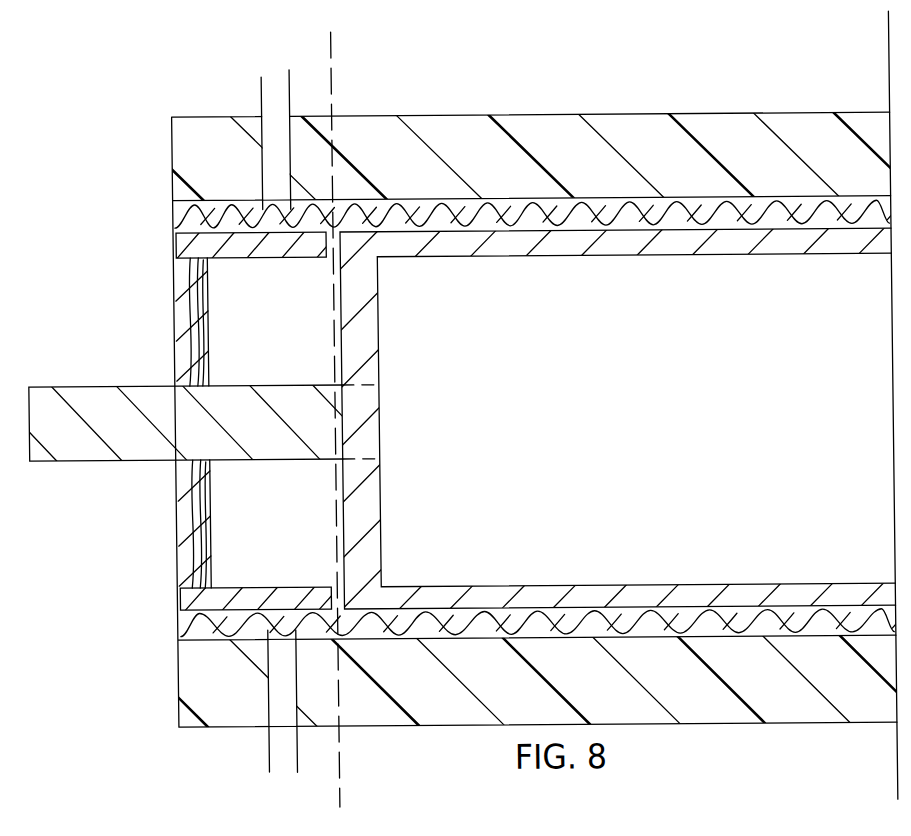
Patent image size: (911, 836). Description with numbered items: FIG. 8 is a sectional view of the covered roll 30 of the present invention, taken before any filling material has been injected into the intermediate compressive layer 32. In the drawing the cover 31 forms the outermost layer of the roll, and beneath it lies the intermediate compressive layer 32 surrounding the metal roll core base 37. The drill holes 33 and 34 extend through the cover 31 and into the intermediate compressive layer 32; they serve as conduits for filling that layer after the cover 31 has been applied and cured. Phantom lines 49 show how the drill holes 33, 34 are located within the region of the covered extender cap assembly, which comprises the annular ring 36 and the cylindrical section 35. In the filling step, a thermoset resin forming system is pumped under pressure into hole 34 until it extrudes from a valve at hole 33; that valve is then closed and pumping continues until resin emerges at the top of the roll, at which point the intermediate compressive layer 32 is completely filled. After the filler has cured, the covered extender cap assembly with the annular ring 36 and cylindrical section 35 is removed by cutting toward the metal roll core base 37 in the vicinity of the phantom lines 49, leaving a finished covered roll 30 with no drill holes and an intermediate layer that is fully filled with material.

The covered roll 30 is at (169, 61).
The cover 31 is at (396, 140).
The intermediate compressive layer 32 is at (465, 214).
The drill hole 33 is at (274, 80).
The drill hole 34 is at (279, 763).
The cylindrical section 35 is at (177, 246).
The annular ring 36 is at (174, 323).
The metal roll core base 37 is at (567, 240).
The phantom lines 49 is at (330, 406).